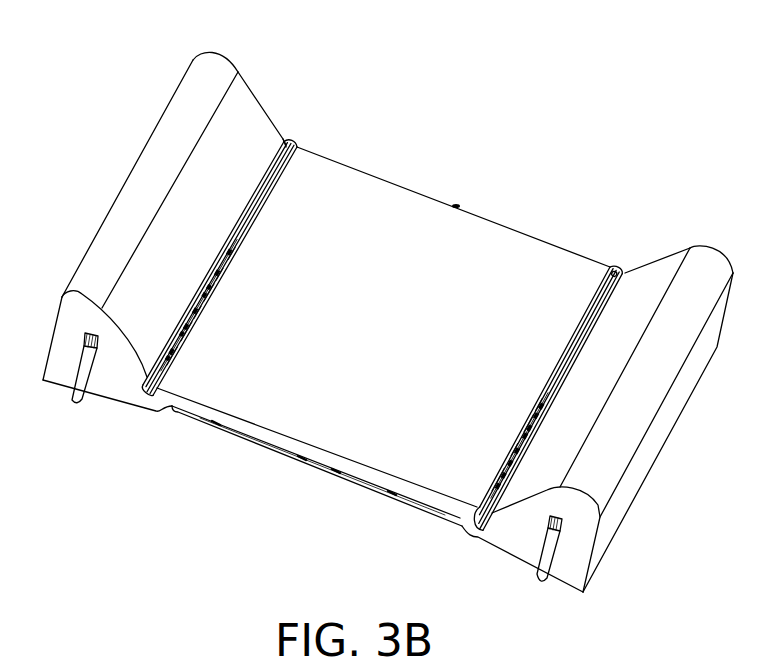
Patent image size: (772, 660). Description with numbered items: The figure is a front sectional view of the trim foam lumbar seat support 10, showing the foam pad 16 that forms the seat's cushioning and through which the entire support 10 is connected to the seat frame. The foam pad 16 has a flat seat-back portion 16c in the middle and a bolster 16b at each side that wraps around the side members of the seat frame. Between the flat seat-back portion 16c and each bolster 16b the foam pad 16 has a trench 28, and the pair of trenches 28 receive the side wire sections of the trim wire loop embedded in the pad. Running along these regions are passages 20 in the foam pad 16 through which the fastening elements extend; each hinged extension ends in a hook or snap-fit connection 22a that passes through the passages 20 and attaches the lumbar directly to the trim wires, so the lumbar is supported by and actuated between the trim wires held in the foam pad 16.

The trim foam lumbar seat support 10 is at (611, 158).
The foam pad 16 is at (178, 75).
The bolster 16b is at (662, 270).
The flat seat-back portion 16c is at (369, 190).
The passages 20 is at (227, 240).
The snap-fit connection 22a is at (205, 283).
The trenches 28 is at (289, 150).